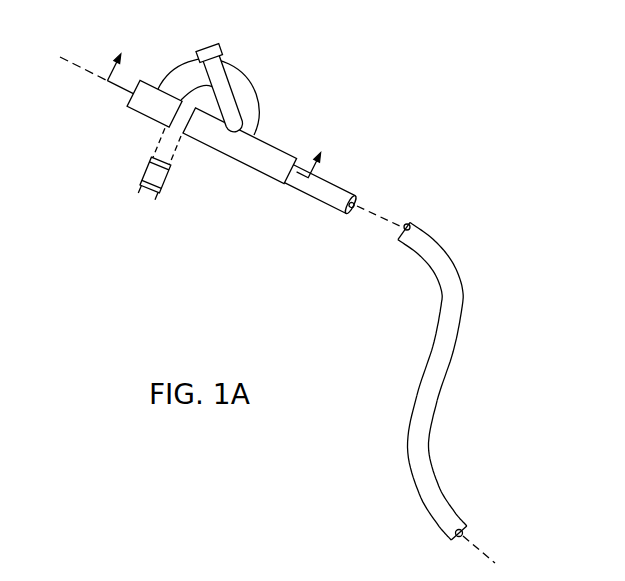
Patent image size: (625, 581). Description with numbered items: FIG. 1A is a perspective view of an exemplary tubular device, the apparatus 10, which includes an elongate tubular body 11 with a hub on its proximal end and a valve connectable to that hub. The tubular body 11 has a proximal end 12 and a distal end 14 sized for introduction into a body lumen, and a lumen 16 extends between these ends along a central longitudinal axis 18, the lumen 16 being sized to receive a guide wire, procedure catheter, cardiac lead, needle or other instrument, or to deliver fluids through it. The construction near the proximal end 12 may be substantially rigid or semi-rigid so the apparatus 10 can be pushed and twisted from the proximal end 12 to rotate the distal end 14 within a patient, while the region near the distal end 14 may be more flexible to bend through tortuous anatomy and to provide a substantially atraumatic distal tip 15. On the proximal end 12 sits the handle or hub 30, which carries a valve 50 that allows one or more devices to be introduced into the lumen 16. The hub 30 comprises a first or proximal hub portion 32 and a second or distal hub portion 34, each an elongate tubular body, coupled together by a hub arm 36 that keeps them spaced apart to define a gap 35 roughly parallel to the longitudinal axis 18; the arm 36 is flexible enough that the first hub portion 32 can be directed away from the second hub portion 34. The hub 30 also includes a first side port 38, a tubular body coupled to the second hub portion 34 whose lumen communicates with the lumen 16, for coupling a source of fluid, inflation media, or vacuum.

The apparatus 10 is at (317, 298).
The elongate tubular body 11 is at (466, 356).
The proximal end 12 is at (305, 193).
The distal end 14 is at (433, 452).
The atraumatic distal tip 15 is at (455, 535).
The lumen 16 is at (409, 226).
The central longitudinal axis 18 is at (84, 70).
The hub 30 is at (223, 151).
The first hub portion 32 is at (139, 113).
The second hub portion 34 is at (242, 163).
The gap 35 is at (181, 133).
The hub arm 36 is at (256, 100).
The first side port 38 is at (226, 59).
The valve 50 is at (147, 198).